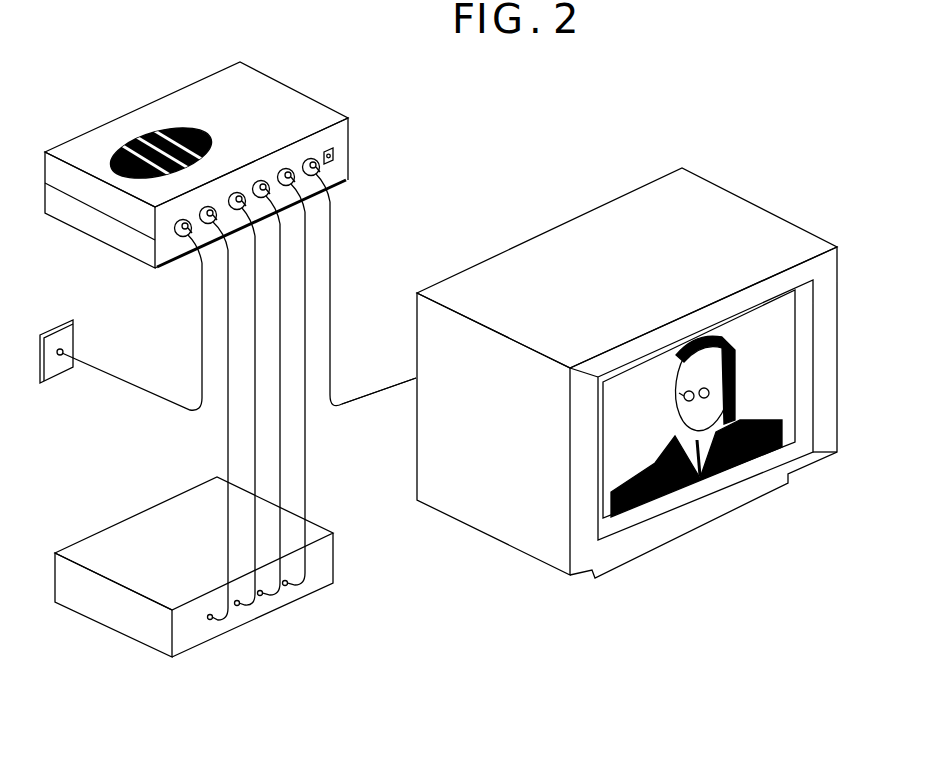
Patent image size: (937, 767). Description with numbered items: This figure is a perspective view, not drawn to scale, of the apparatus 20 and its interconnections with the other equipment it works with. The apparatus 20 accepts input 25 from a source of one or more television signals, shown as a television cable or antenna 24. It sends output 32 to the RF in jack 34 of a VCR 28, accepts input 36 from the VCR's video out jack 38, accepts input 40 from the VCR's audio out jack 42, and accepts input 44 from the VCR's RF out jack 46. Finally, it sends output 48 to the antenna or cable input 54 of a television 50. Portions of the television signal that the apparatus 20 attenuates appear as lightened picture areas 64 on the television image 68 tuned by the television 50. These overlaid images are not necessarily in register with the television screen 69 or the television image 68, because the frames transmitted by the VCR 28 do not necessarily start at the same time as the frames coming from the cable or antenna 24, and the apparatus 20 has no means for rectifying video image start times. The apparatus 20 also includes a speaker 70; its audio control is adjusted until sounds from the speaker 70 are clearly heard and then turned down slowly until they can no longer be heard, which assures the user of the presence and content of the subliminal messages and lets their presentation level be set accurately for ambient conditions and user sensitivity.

The apparatus 20 is at (308, 69).
The television cable or antenna 24 is at (58, 349).
The input from television cable or antenna 25 is at (181, 237).
The VCR 28 is at (328, 493).
The output to VCR RF in jack 32 is at (202, 297).
The VCR RF in jack 34 is at (210, 622).
The input from VCR video out jack 36 is at (229, 288).
The VCR video out jack 38 is at (237, 608).
The input from VCR audio out jack 40 is at (264, 211).
The VCR audio out jack 42 is at (260, 600).
The input from VCR RF out jack 44 is at (268, 194).
The VCR RF out jack 46 is at (285, 588).
The output to television 48 is at (322, 182).
The television 50 is at (730, 165).
The television antenna or cable input 54 is at (416, 378).
The lightened picture areas 64 is at (611, 517).
The television image 68 is at (699, 478).
The television screen 69 is at (773, 350).
The speaker 70 is at (143, 133).